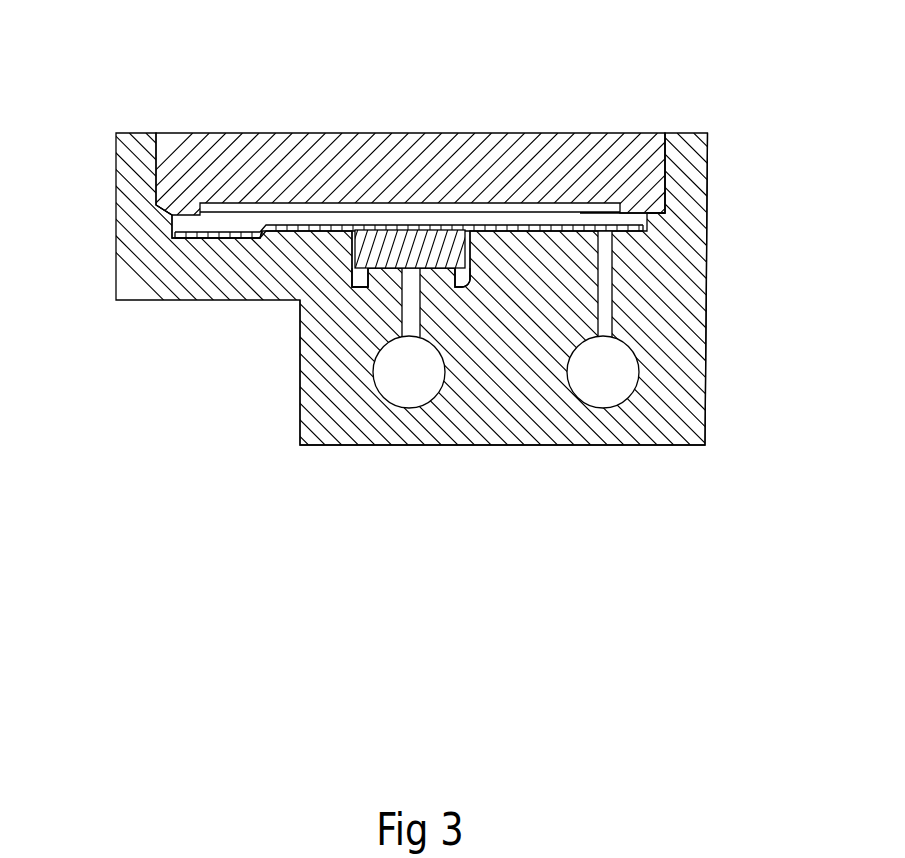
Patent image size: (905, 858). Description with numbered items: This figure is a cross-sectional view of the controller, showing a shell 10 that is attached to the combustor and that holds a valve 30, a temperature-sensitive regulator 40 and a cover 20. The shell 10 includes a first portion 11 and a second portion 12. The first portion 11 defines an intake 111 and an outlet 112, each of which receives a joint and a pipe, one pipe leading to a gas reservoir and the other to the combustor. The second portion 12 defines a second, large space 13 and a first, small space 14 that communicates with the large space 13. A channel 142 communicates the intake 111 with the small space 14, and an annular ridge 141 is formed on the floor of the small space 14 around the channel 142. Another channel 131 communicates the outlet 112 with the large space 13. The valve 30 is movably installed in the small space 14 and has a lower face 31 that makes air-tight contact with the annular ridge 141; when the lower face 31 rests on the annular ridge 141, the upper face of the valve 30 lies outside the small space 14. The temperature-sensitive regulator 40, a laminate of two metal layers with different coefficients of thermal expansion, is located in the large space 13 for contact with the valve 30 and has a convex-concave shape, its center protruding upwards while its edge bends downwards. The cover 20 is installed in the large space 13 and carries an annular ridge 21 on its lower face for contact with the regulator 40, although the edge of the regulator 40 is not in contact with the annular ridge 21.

The shell 10 is at (152, 284).
The first portion 11 is at (673, 405).
The second portion 12 is at (673, 185).
The second, large space 13 is at (197, 225).
The first, small space 14 is at (358, 273).
The annular ridge 141 is at (388, 272).
The channel 142 is at (407, 313).
The intake 111 is at (392, 390).
The outlet 112 is at (607, 387).
The channel 131 is at (605, 315).
The cover 20 is at (211, 163).
The annular ridge 21 is at (178, 212).
The valve 30 is at (370, 243).
The lower face 31 is at (477, 283).
The temperature-sensitive regulator 40 is at (288, 228).